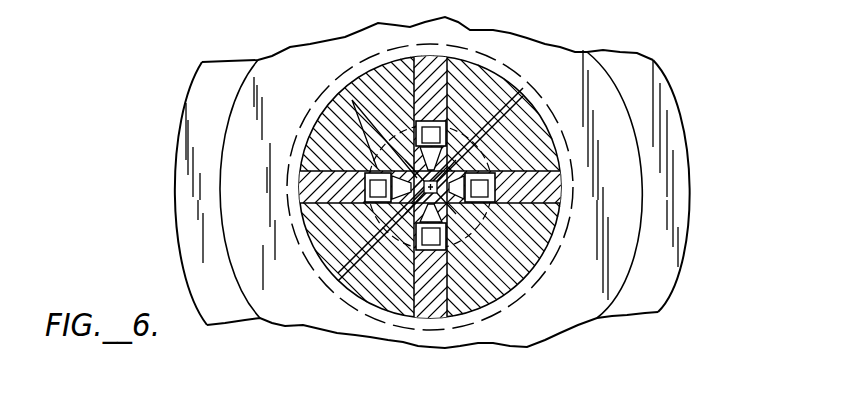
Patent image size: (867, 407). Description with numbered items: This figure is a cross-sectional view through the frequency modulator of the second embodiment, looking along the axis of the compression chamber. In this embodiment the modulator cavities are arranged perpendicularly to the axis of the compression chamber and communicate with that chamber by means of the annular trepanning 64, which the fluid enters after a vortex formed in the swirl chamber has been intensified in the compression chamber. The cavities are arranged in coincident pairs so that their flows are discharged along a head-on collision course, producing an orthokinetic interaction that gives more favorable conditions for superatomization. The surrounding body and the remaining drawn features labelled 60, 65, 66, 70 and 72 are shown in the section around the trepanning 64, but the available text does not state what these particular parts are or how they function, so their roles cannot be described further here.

The load cell housing / shaft section 60 is at (385, 317).
The annular trepanning 64 is at (433, 120).
The lead wire 65 is at (352, 100).
The strain gauge 66 is at (470, 174).
The diaphragm disc 70 is at (362, 289).
The diagonal slot 72 is at (523, 86).